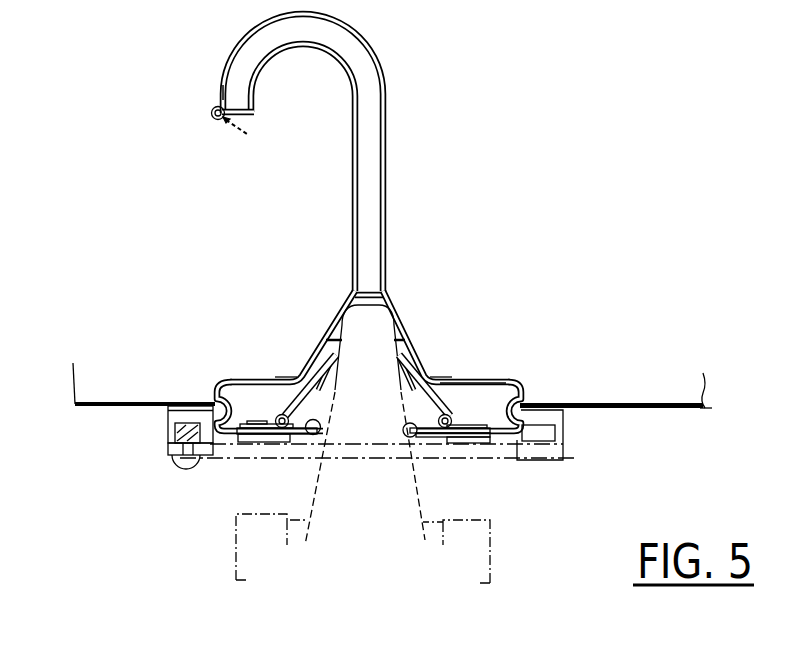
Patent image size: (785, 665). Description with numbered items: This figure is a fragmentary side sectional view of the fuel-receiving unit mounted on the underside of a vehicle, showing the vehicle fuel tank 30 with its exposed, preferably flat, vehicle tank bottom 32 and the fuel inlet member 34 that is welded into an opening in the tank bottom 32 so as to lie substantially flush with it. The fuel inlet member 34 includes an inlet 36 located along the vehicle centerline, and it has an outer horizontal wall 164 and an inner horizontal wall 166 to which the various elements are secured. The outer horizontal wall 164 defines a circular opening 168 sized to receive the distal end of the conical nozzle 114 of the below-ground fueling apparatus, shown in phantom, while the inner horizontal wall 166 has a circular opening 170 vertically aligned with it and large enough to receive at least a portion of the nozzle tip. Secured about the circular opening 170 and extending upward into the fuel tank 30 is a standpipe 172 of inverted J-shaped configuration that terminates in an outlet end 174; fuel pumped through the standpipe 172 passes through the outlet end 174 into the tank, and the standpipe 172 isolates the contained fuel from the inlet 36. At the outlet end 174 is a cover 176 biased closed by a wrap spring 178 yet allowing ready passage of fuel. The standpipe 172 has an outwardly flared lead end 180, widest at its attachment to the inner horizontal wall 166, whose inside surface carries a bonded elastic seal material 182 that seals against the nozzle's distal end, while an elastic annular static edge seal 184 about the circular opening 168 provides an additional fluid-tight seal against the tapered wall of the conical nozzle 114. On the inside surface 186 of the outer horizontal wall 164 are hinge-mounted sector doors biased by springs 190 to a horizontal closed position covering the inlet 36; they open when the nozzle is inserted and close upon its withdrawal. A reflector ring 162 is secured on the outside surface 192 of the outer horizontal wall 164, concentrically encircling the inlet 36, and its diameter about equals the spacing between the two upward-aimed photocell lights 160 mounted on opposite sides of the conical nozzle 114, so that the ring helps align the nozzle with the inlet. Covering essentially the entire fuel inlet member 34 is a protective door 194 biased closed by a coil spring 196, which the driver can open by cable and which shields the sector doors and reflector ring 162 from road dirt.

The vehicle fuel tank 30 is at (598, 403).
The vehicle tank bottom 32 is at (635, 409).
The fuel inlet member 34 is at (514, 386).
The inlet 36 is at (416, 360).
The conical nozzle 114 is at (323, 452).
The photocell lights 160 is at (273, 517).
The reflector ring 162 is at (250, 452).
The outer horizontal wall 164 is at (492, 438).
The inner horizontal wall 166 is at (462, 381).
The circular opening 168 is at (300, 460).
The circular opening 170 is at (306, 366).
The standpipe 172 is at (387, 108).
The outlet end 174 is at (223, 85).
The cover 176 is at (233, 128).
The wrap spring 178 is at (211, 113).
The outwardly flared lead end 180 is at (392, 326).
The elastic seal material 182 is at (400, 338).
The elastic annular static edge seal 184 is at (405, 446).
The inside surface 186 is at (214, 386).
The springs 190 is at (277, 418).
The outside surface 192 is at (522, 428).
The protective door 194 is at (388, 452).
The coil spring 196 is at (183, 433).